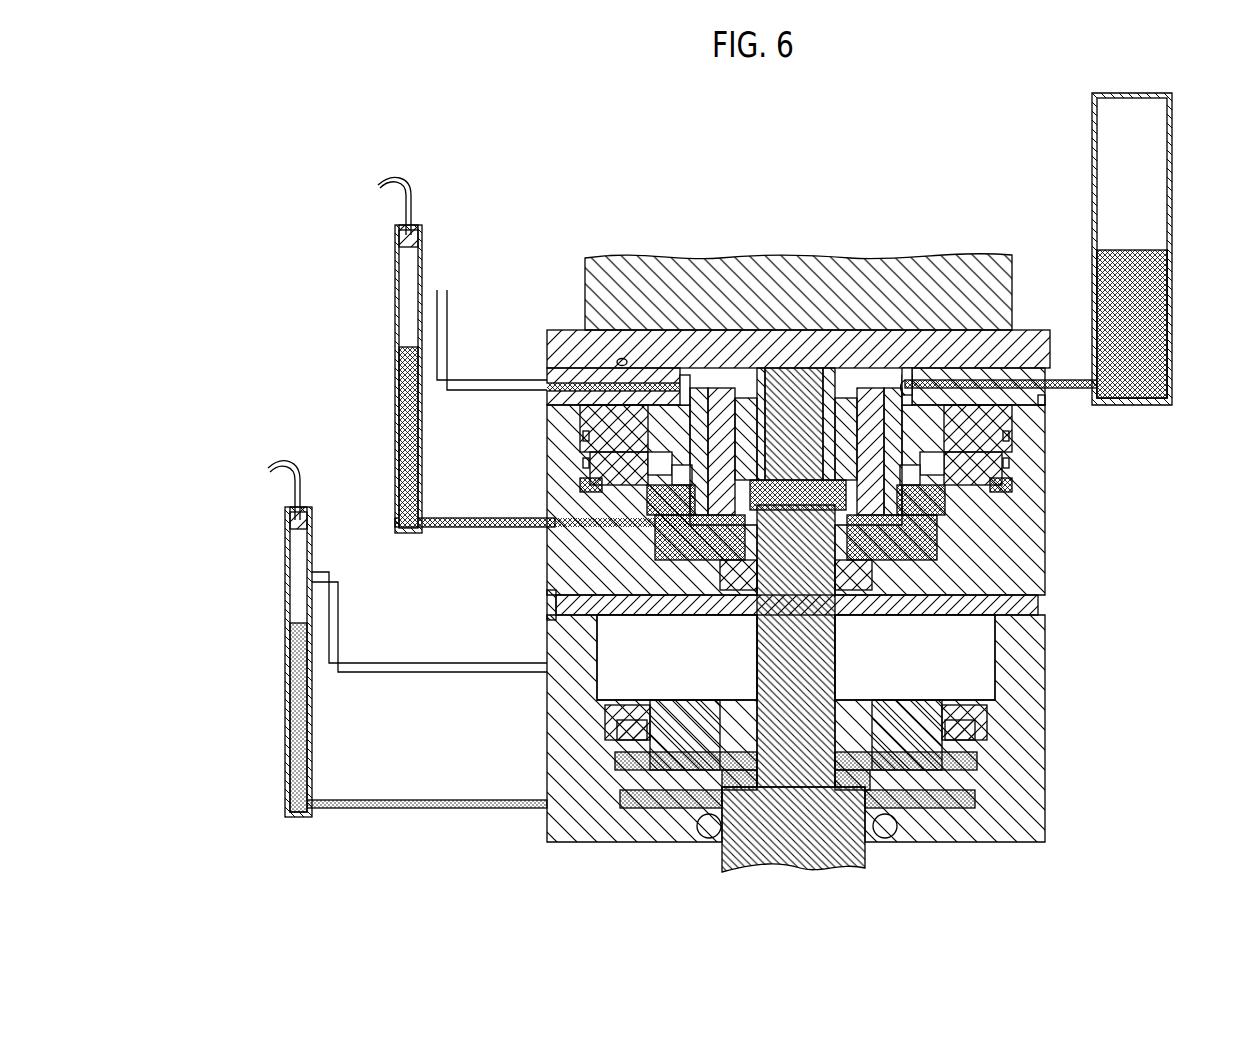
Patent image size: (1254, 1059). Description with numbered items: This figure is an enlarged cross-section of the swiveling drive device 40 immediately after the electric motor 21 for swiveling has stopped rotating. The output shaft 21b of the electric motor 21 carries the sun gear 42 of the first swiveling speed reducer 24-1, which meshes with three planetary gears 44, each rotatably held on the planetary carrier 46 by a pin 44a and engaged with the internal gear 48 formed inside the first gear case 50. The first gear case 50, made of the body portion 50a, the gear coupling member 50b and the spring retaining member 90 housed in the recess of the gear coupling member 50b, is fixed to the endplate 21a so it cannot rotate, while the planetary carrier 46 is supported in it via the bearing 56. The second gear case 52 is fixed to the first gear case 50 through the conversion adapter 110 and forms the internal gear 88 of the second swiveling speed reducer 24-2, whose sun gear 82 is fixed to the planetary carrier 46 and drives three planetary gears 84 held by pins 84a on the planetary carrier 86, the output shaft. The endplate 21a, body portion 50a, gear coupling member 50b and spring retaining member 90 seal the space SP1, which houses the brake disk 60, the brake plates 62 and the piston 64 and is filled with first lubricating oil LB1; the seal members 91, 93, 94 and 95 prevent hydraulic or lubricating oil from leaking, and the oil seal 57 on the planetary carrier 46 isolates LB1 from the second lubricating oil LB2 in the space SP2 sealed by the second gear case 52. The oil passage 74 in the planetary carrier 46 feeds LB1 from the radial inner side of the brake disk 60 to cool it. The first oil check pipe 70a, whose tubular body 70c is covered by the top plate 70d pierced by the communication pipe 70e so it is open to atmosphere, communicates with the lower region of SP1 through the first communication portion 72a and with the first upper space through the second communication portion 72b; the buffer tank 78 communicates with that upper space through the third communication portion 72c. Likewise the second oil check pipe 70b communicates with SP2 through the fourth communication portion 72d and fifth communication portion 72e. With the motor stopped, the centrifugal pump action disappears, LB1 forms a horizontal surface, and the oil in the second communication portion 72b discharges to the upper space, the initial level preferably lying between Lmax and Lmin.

The electric motor for swiveling 21 is at (886, 282).
The endplate 21a is at (560, 354).
The output shaft 21b is at (796, 402).
The first swiveling speed reducer 24-1 is at (741, 182).
The second swiveling speed reducer 24-2 is at (1143, 700).
The swiveling drive device 40 is at (565, 207).
The sun gear 42 is at (762, 402).
The planetary gears 44 is at (746, 412).
The pin 44a is at (757, 492).
The planetary carrier 46 is at (720, 402).
The internal gear 48 is at (695, 402).
The first gear case 50 is at (873, 481).
The body portion 50a is at (1030, 507).
The gear coupling member 50b is at (1046, 434).
The second gear case 52 is at (575, 744).
The bearing 56 is at (595, 562).
The oil seal 57 is at (1040, 607).
The brake disk 60 is at (1046, 464).
The brake plate 62 is at (980, 534).
The piston 64 is at (1046, 430).
The first oil check pipe 70a is at (738, 349).
The second oil check pipe 70b is at (281, 629).
The tubular body 70c is at (395, 314).
The top plate 70d is at (418, 237).
The communication pipe 70e is at (408, 212).
The first communication portion 72a is at (462, 532).
The second communication portion 72b is at (455, 322).
The third communication portion 72c is at (1068, 382).
The fourth communication portion 72d is at (465, 812).
The fifth communication portion 72e is at (462, 677).
The oil passage 74 is at (960, 567).
The buffer tank 78 is at (1160, 127).
The sun gear 82 is at (965, 708).
The planetary gear 84 is at (960, 732).
The pin 84a is at (950, 750).
The planetary carrier 86 is at (985, 792).
The internal gear 88 is at (1000, 808).
The spring retaining member 90 is at (1046, 404).
The seal member 91 is at (583, 464).
The seal member 93 is at (618, 360).
The seal member 94 is at (562, 386).
The seal member 95 is at (583, 436).
The conversion adapter 110 is at (556, 604).
The first lubricating oil LB1 is at (405, 412).
The second lubricating oil LB2 is at (295, 692).
The space SP1 is at (912, 387).
The space SP2 is at (605, 640).
The oil surface position Lmax is at (547, 405).
The oil surface position Lmin is at (547, 465).